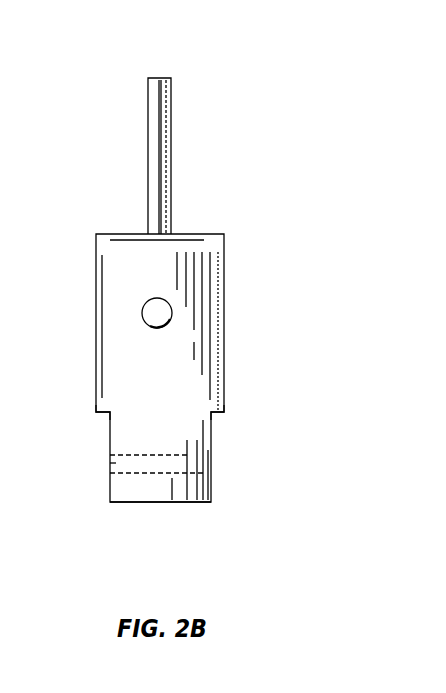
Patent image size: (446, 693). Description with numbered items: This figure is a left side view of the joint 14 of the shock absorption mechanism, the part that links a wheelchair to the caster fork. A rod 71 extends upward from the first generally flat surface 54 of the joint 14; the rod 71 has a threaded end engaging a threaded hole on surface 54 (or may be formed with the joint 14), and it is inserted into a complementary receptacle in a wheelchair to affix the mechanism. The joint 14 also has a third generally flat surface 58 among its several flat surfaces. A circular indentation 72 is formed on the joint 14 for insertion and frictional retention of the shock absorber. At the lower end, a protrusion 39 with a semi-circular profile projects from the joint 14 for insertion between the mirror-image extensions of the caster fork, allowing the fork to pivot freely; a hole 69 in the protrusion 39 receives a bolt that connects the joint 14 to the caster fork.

The joint 14 is at (205, 64).
The rod 71 is at (171, 158).
The first generally flat surface 54 is at (178, 233).
The circular indentation 72 is at (173, 314).
The third generally flat surface 58 is at (103, 415).
The hole 69 is at (110, 463).
The protrusion 39 is at (172, 502).